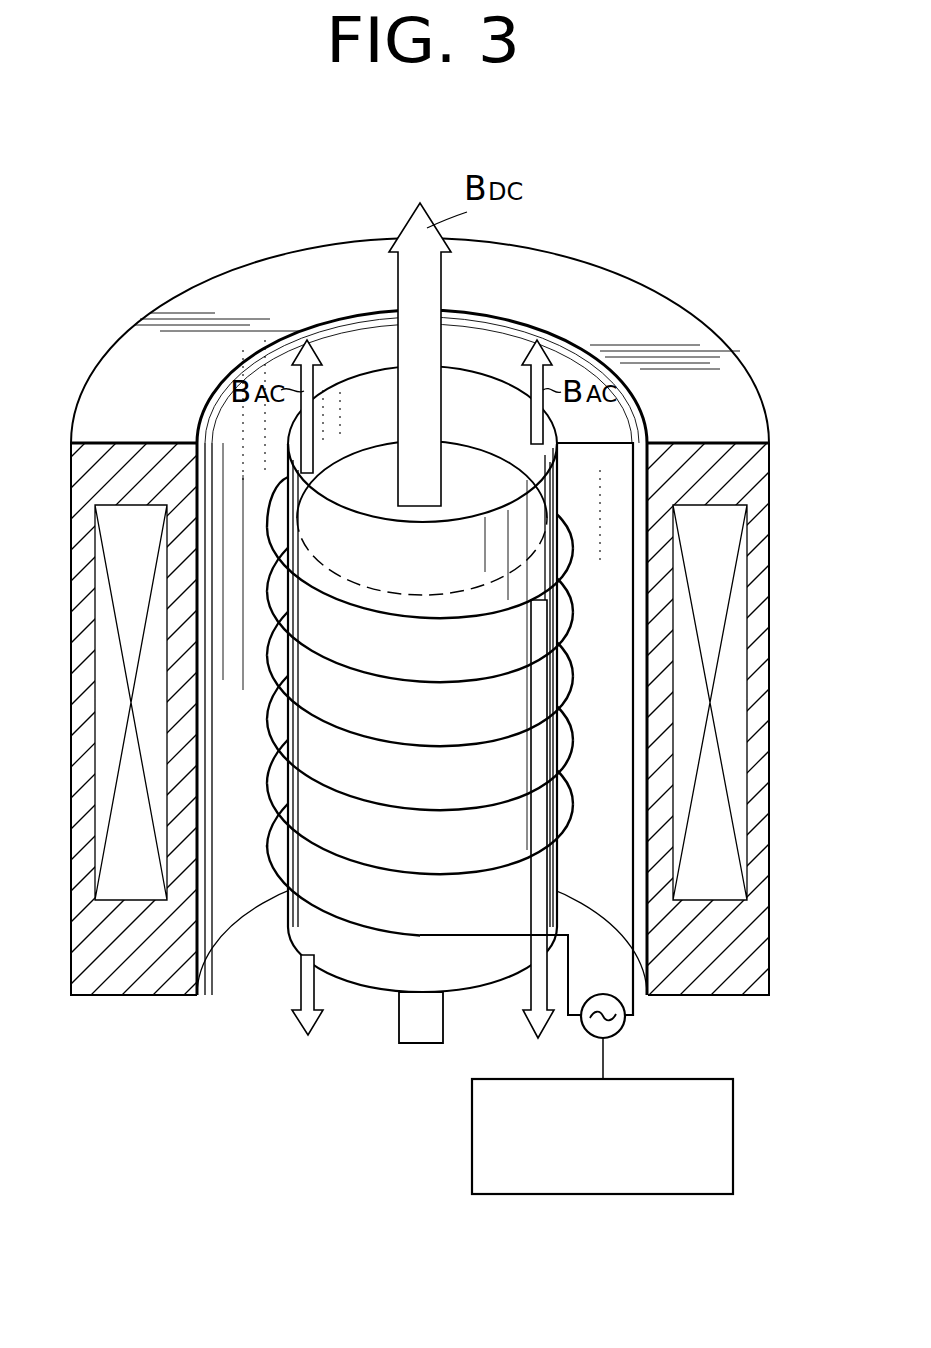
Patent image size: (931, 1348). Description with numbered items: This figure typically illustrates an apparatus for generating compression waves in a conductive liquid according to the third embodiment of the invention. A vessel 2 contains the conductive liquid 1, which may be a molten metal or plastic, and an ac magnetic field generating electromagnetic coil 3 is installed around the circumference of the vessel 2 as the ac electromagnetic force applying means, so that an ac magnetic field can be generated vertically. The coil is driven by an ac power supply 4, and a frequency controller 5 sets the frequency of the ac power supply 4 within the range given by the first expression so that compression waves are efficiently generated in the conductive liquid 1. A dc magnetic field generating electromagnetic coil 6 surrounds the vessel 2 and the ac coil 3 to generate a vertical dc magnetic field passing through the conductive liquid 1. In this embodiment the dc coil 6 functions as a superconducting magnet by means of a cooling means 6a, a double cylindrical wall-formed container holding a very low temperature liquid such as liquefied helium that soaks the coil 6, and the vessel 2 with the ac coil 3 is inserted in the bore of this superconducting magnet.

The conductive liquid 1 is at (517, 479).
The vessel 2 is at (351, 376).
The ac magnetic field generating electromagnetic coil 3 is at (268, 717).
The ac power supply 4 is at (621, 1027).
The frequency controller 5 is at (722, 1079).
The dc magnetic field generating electromagnetic coil 6 is at (752, 616).
The cooling means 6a is at (770, 718).